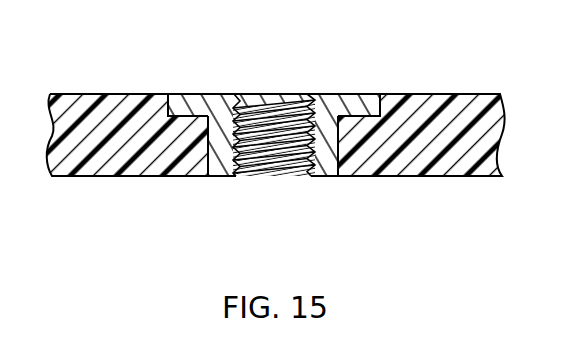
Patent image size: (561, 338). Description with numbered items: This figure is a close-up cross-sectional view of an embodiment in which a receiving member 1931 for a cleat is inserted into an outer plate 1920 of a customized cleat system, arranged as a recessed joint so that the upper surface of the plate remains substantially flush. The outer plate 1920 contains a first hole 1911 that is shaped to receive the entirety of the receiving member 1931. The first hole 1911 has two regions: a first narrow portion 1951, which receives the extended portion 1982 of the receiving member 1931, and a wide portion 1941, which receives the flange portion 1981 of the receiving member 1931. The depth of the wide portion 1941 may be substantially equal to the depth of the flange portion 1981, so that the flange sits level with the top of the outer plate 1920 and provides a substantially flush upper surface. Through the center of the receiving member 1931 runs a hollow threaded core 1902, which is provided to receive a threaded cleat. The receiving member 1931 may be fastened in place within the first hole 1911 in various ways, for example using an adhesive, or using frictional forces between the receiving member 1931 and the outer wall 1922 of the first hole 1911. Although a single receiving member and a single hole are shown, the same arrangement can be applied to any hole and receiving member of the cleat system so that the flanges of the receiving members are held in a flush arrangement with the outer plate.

The outer plate 1920 is at (103, 94).
The outer wall 1922 is at (340, 160).
The wide portion 1941 is at (173, 92).
The receiving member 1931 is at (306, 90).
The flange portion 1981 is at (358, 112).
The first hole 1911 is at (214, 137).
The extended portion 1982 is at (333, 167).
The hollow threaded core 1902 is at (309, 158).
The first narrow portion 1951 is at (209, 178).